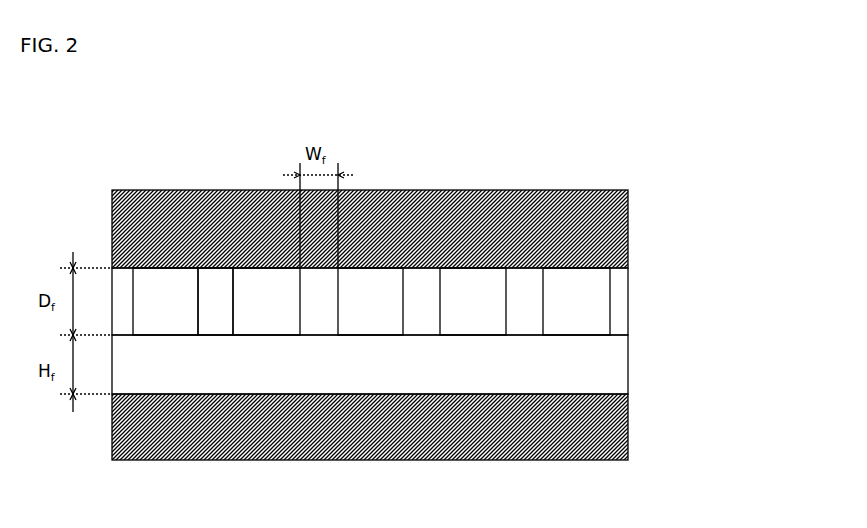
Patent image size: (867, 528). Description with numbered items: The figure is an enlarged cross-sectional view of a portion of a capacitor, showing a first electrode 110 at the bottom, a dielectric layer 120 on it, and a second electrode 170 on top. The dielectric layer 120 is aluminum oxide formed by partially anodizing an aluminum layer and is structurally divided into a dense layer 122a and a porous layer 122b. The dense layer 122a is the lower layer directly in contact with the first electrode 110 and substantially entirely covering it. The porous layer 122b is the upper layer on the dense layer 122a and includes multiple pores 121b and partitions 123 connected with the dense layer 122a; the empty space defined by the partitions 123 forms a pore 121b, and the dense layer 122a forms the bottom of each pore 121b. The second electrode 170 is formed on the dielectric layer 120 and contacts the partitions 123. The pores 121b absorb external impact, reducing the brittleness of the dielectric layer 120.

The first electrode 110 is at (590, 428).
The dielectric layer 120 is at (454, 259).
The dense layer 122a is at (597, 370).
The porous layer 122b is at (422, 230).
The pore 121b is at (477, 298).
The partition 123 is at (215, 293).
The second electrode 170 is at (591, 232).